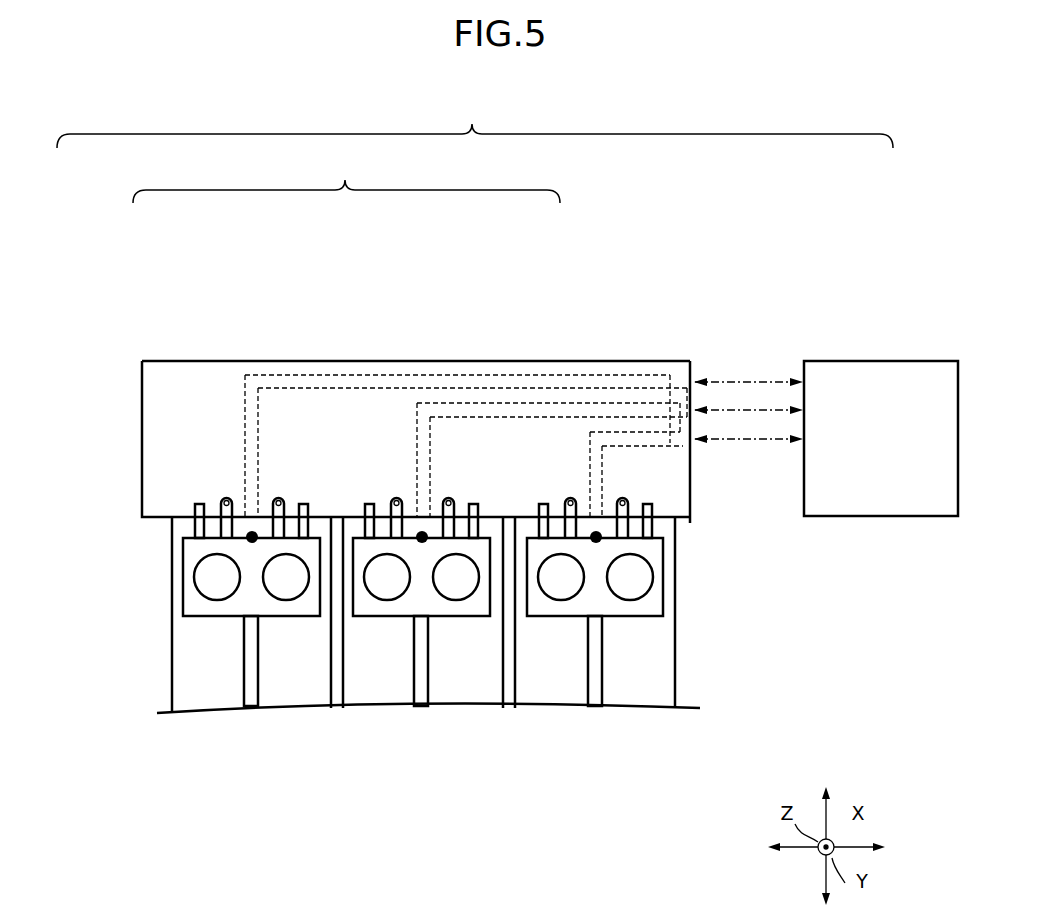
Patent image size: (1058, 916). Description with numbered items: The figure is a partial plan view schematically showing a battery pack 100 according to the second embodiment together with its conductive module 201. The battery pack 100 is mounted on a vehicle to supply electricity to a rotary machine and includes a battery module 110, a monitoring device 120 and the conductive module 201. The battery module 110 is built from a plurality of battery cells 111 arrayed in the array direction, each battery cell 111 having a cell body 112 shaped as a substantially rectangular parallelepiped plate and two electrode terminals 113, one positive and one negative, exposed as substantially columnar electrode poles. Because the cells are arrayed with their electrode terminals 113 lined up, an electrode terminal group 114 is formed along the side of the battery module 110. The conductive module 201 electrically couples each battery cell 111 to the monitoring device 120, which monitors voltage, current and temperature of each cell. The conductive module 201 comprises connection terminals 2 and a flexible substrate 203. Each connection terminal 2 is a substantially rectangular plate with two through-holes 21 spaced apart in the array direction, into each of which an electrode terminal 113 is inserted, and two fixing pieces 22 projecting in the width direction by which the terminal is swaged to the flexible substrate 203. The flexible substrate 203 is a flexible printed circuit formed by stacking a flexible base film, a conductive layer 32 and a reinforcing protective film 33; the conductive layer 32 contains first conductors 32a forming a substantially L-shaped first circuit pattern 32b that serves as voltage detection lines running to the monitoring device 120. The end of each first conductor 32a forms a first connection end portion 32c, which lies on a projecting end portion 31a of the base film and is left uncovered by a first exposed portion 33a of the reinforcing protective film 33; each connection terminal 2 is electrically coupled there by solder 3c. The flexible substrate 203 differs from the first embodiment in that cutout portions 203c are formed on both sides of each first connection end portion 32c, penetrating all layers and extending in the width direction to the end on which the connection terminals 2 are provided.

The battery pack 100 is at (475, 122).
The battery module 110 is at (63, 561).
The monitoring device 120 is at (880, 346).
The conductive module 201 is at (346, 178).
The flexible substrate 203 is at (187, 346).
The connection terminal 2 is at (288, 520).
The reinforcing protective film 33 is at (160, 372).
The cutout portion 203c is at (277, 498).
The first connection end portion 32c is at (256, 524).
The first exposed portion 33a is at (240, 520).
The fixing piece 22 is at (302, 505).
The first conductor 32a is at (695, 405).
The conductive layer 32 is at (505, 379).
The first circuit pattern 32b is at (657, 362).
The projecting end portion 31a is at (193, 549).
The solder 3c is at (193, 553).
The through-hole 21 is at (386, 578).
The electrode terminal 113 is at (386, 590).
The cell body 112 is at (357, 683).
The battery cell 111 is at (210, 720).
The electrode terminal group 114 is at (792, 607).